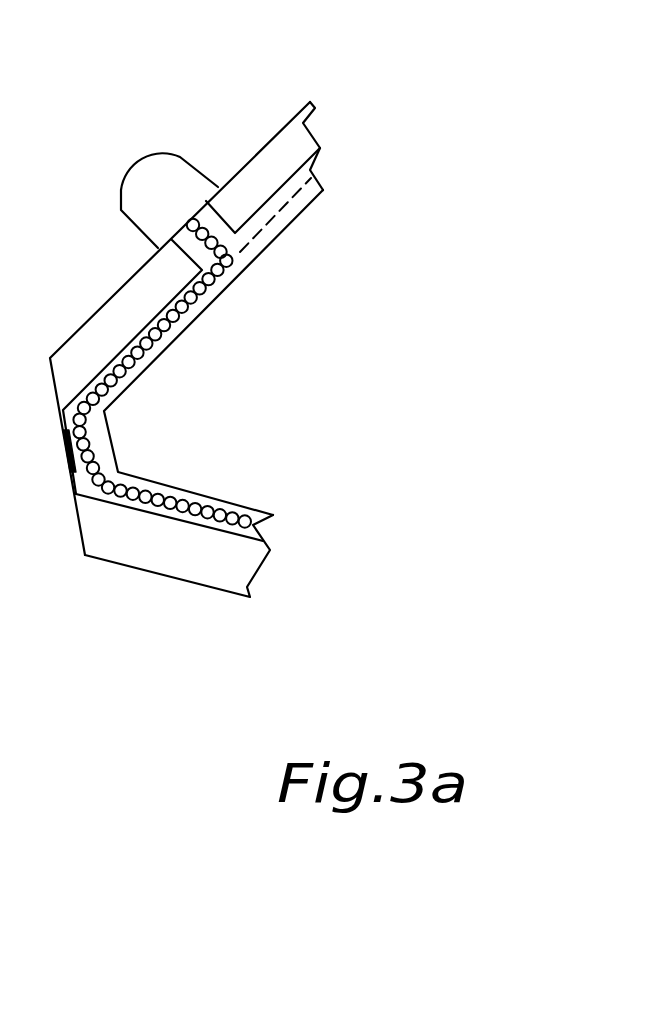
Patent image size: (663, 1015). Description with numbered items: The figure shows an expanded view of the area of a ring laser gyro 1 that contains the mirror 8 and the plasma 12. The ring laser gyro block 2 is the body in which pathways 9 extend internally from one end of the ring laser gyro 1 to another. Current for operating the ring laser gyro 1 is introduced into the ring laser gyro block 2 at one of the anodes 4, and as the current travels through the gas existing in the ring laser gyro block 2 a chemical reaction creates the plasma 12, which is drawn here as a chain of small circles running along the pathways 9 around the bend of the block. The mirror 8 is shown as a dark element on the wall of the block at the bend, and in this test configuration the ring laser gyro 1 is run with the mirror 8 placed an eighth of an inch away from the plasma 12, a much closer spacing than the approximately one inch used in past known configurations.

The ring laser gyro 1 is at (470, 212).
The ring laser gyro block 2 is at (263, 160).
The anode 4 is at (140, 155).
The mirror 8 is at (64, 452).
The pathway 9 is at (225, 531).
The plasma 12 is at (194, 500).